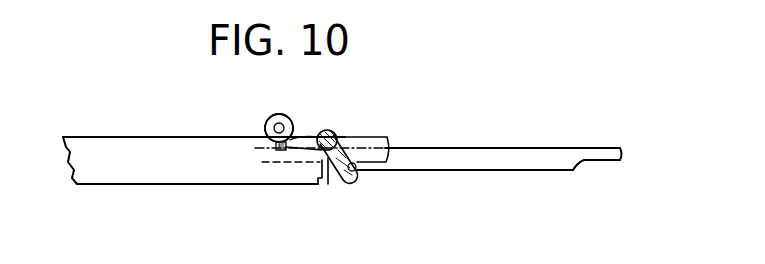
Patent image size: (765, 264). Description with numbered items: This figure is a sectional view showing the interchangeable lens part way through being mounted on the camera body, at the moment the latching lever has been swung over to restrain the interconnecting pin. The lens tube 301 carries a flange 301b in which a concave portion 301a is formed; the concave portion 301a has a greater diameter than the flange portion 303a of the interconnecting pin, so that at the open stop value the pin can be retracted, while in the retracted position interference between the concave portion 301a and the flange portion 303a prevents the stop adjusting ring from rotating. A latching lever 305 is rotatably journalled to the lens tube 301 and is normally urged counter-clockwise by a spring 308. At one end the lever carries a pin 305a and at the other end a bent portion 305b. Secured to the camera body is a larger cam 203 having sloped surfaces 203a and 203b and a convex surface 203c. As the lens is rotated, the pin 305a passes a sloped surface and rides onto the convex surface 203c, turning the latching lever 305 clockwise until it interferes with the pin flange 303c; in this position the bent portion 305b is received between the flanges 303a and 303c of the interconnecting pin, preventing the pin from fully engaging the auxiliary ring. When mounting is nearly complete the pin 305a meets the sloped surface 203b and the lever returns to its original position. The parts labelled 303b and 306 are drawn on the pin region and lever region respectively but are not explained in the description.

The lens tube 301 is at (130, 170).
The concave portion 301a is at (276, 146).
The flange 301b is at (137, 137).
The flange portion 303a is at (282, 113).
The roller pin 303b is at (269, 118).
The flange portion 303c is at (331, 106).
The latching lever 305 is at (304, 140).
The pin 305a is at (352, 176).
The bent portion 305b is at (283, 153).
The lever 306 is at (342, 132).
The spring 308 is at (315, 178).
The larger cam 203 is at (498, 158).
The sloped surface 203a is at (580, 163).
The sloped surface 203b is at (337, 171).
The convex surface 203c is at (506, 170).